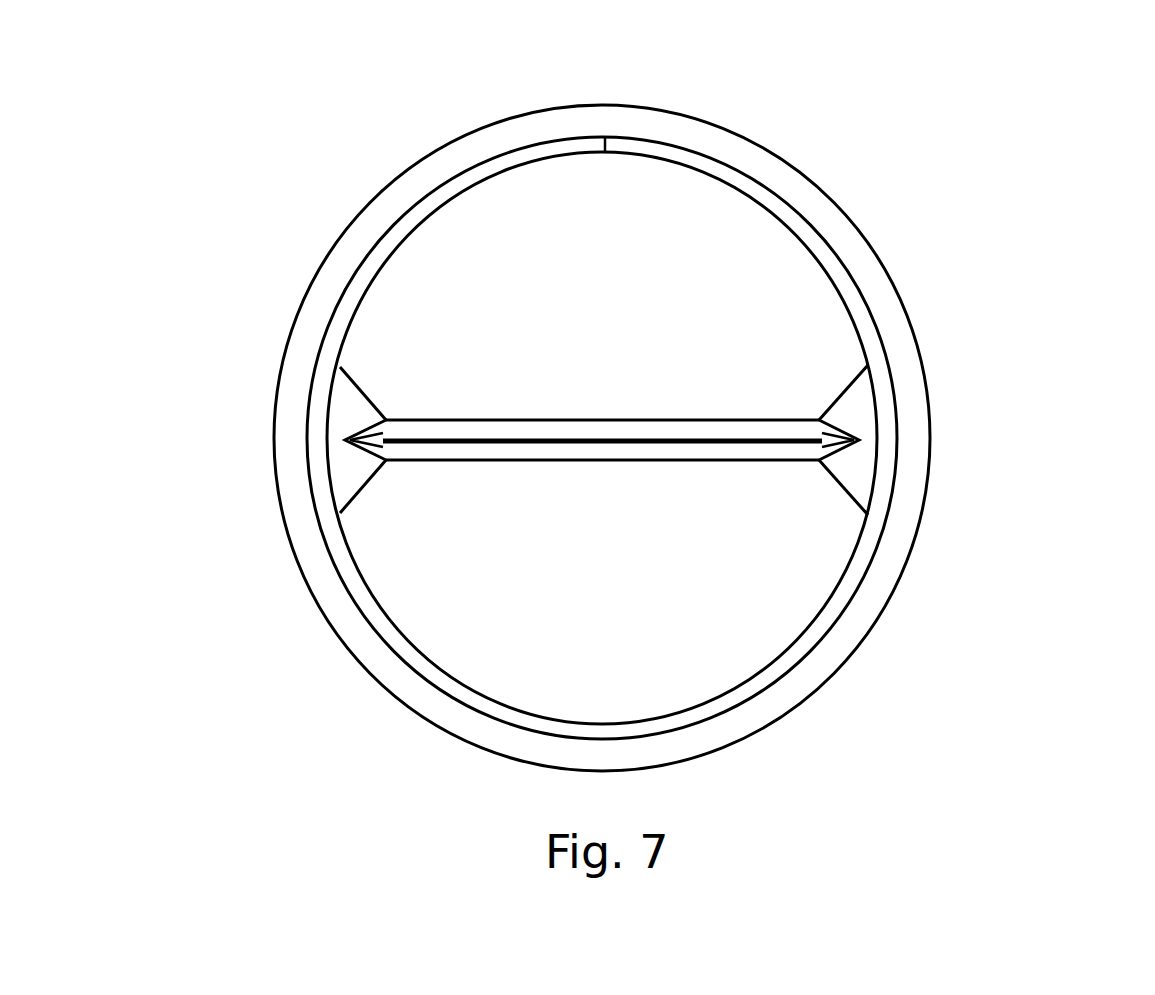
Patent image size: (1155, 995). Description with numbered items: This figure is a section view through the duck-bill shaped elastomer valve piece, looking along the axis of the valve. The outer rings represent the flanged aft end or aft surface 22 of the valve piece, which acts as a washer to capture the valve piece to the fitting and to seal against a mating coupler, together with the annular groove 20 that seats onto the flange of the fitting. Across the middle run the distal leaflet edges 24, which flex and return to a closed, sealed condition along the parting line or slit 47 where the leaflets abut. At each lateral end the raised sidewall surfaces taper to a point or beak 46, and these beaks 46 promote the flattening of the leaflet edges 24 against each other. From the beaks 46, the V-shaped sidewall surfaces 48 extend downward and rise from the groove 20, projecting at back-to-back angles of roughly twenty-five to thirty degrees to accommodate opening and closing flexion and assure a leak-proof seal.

The annular groove 20 is at (772, 202).
The aft surface 22 is at (380, 193).
The leaflet edges 24 is at (602, 360).
The beak 46 is at (382, 422).
The parting line 47 is at (685, 440).
The sidewall surfaces 48 is at (352, 467).